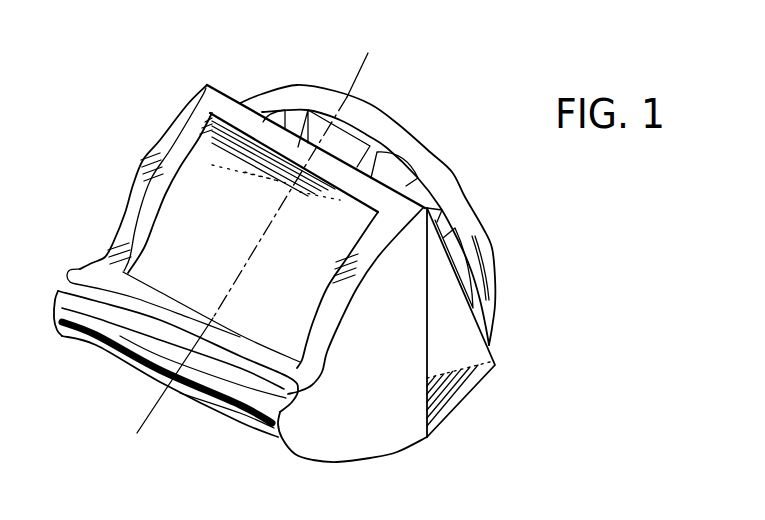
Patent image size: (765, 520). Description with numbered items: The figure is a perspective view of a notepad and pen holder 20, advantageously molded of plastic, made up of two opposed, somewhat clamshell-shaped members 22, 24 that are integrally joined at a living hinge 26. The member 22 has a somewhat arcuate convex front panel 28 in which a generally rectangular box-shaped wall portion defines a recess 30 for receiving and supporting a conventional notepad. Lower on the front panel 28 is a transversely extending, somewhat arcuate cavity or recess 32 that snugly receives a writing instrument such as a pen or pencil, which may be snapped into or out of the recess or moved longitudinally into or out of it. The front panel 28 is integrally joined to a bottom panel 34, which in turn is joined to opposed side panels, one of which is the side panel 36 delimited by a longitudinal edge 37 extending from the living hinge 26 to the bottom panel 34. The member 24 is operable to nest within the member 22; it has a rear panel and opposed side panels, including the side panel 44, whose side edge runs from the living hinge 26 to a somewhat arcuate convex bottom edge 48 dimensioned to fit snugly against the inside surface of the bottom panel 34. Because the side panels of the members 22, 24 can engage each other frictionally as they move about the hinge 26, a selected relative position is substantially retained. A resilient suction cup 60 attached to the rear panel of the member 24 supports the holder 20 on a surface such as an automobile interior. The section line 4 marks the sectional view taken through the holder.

The notepad and pen holder 20 is at (131, 62).
The clamshell-shaped member 22 is at (313, 465).
The clamshell-shaped member 24 is at (491, 339).
The living hinge 26 is at (418, 176).
The front panel 28 is at (137, 193).
The recess 30 is at (218, 233).
The cavity or recess 32 is at (64, 271).
The bottom panel 34 is at (226, 418).
The side panel 36 is at (402, 430).
The longitudinal edge 37 is at (436, 316).
The side panel 44 is at (462, 333).
The bottom edge 48 is at (467, 393).
The suction cup 60 is at (484, 222).
The section line 4- 4 is at (368, 53).